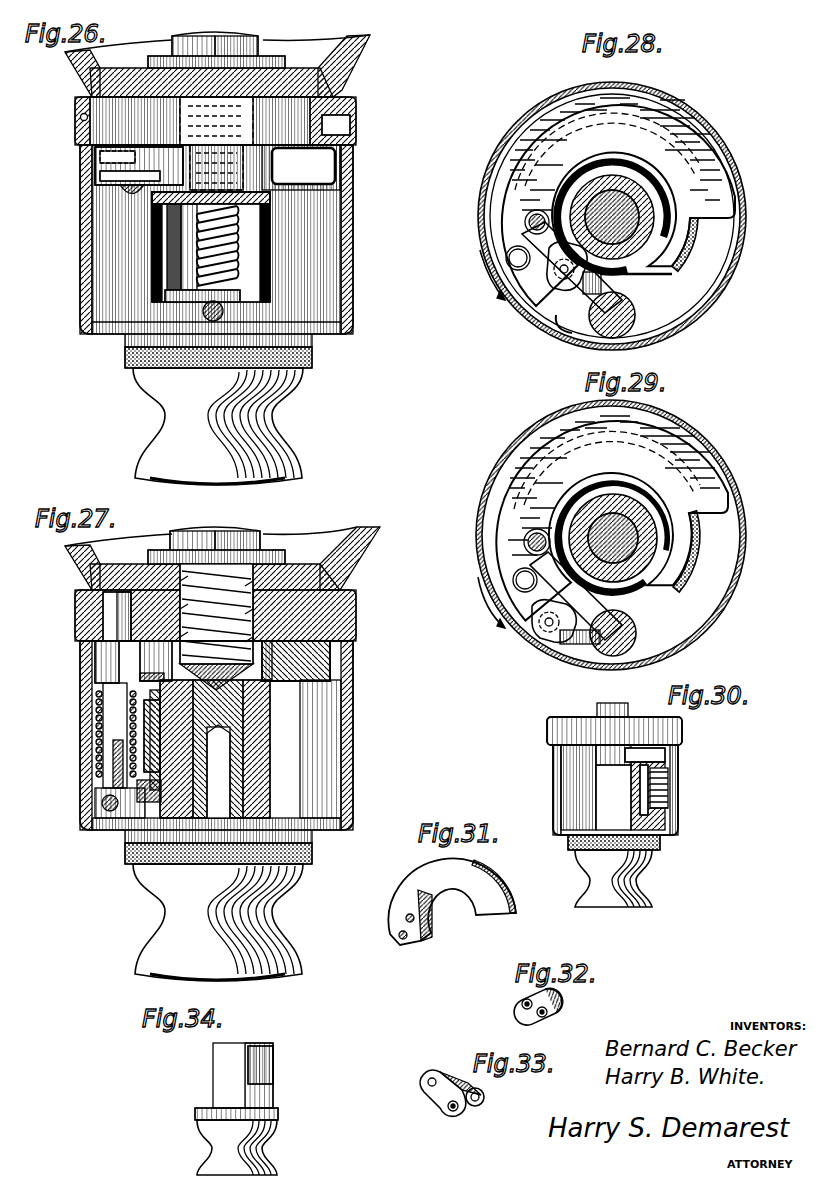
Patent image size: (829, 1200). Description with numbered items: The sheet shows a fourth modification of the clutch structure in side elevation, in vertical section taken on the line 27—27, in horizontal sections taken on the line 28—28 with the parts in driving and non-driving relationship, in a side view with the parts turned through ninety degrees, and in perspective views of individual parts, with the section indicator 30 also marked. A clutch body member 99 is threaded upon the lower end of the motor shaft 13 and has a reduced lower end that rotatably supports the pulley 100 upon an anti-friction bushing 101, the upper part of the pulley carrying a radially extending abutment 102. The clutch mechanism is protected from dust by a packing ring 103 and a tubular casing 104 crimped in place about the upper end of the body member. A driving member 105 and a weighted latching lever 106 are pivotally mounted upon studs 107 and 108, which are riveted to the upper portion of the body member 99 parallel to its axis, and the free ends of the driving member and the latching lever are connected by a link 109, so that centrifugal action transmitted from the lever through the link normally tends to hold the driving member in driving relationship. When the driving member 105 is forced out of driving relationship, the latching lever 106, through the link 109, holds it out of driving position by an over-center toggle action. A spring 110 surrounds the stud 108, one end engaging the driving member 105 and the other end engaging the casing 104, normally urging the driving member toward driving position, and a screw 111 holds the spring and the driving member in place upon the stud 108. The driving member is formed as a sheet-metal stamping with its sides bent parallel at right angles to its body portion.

In FIG. 26, the motor shaft 13 is at (252, 48).
In FIG. 27, the motor shaft 13 is at (262, 538).
In FIG. 28, the motor shaft 13 is at (640, 238).
In FIG. 29, the motor shaft 13 is at (637, 546).
In FIG. 30, the motor shaft 13 is at (600, 712).
In FIG. 26, the section line 27— 27 is at (224, 32).
In FIG. 27, the section line 27— 27 is at (217, 507).
In FIG. 26, the section line 28— 28 is at (52, 120).
In FIG. 28, the section line 30- 30 is at (464, 290).
In FIG. 26, the clutch body member 99 is at (340, 112).
In FIG. 27, the clutch body member 99 is at (345, 612).
In FIG. 30, the clutch body member 99 is at (562, 734).
In FIG. 26, the pulley 100 is at (278, 440).
In FIG. 27, the pulley 100 is at (280, 893).
In FIG. 30, the pulley 100 is at (595, 889).
In FIG. 34, the pulley 100 is at (262, 1150).
In FIG. 27, the anti-friction bushing 101 is at (247, 746).
In FIG. 27, the radially extending abutment 102 is at (100, 750).
In FIG. 28, the radially extending abutment 102 is at (692, 300).
In FIG. 29, the radially extending abutment 102 is at (560, 582).
In FIG. 34, the radially extending abutment 102 is at (274, 1064).
In FIG. 26, the packing ring 103 is at (300, 373).
In FIG. 27, the packing ring 103 is at (300, 862).
In FIG. 28, the packing ring 103 is at (690, 282).
In FIG. 30, the packing ring 103 is at (652, 847).
In FIG. 26, the tubular casing 104 is at (354, 278).
In FIG. 27, the tubular casing 104 is at (348, 690).
In FIG. 28, the tubular casing 104 is at (700, 262).
In FIG. 29, the tubular casing 104 is at (611, 535).
In FIG. 30, the tubular casing 104 is at (685, 790).
In FIG. 26, the driving member 105 is at (153, 250).
In FIG. 27, the driving member 105 is at (150, 800).
In FIG. 28, the driving member 105 is at (565, 300).
In FIG. 30, the driving member 105 is at (682, 783).
In FIG. 33, the driving member 105 is at (426, 1097).
In FIG. 26, the weighted latching lever 106 is at (322, 176).
In FIG. 27, the weighted latching lever 106 is at (318, 657).
In FIG. 28, the weighted latching lever 106 is at (686, 142).
In FIG. 29, the weighted latching lever 106 is at (612, 518).
In FIG. 30, the weighted latching lever 106 is at (561, 757).
In FIG. 31, the weighted latching lever 106 is at (439, 900).
In FIG. 26, the stud 107 is at (268, 200).
In FIG. 27, the stud 107 is at (118, 703).
In FIG. 28, the stud 107 is at (640, 322).
In FIG. 26, the stud 108 is at (150, 122).
In FIG. 27, the stud 108 is at (110, 622).
In FIG. 28, the stud 108 is at (527, 221).
In FIG. 29, the stud 108 is at (530, 537).
In FIG. 26, the link 109 is at (112, 165).
In FIG. 27, the link 109 is at (143, 660).
In FIG. 28, the link 109 is at (532, 288).
In FIG. 29, the link 109 is at (534, 638).
In FIG. 30, the link 109 is at (678, 757).
In FIG. 32, the link 109 is at (520, 1014).
In FIG. 26, the spring 110 is at (238, 262).
In FIG. 27, the spring 110 is at (147, 733).
In FIG. 28, the spring 110 is at (567, 330).
In FIG. 30, the spring 110 is at (668, 805).
In FIG. 26, the screw 111 is at (224, 312).
In FIG. 27, the screw 111 is at (105, 812).